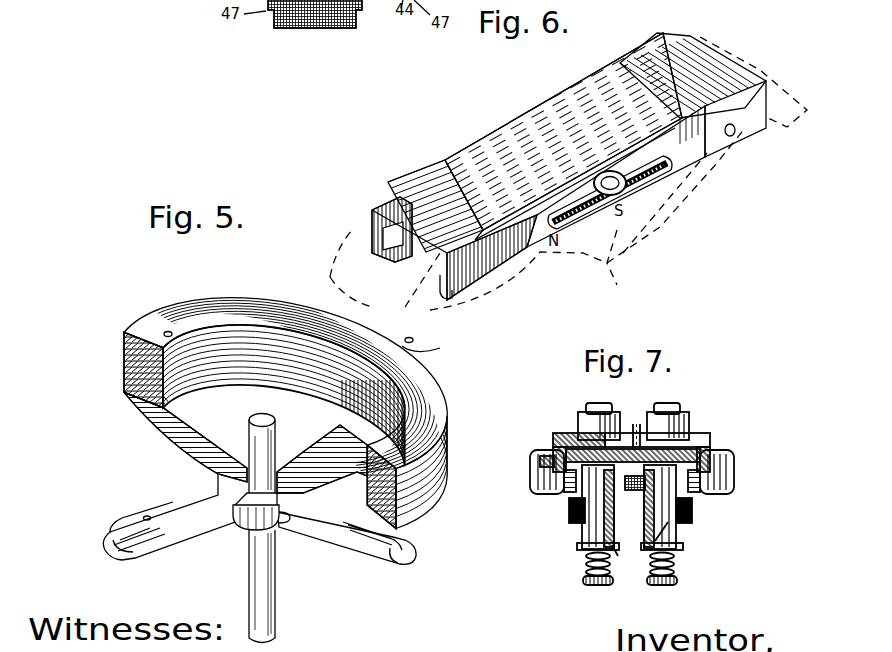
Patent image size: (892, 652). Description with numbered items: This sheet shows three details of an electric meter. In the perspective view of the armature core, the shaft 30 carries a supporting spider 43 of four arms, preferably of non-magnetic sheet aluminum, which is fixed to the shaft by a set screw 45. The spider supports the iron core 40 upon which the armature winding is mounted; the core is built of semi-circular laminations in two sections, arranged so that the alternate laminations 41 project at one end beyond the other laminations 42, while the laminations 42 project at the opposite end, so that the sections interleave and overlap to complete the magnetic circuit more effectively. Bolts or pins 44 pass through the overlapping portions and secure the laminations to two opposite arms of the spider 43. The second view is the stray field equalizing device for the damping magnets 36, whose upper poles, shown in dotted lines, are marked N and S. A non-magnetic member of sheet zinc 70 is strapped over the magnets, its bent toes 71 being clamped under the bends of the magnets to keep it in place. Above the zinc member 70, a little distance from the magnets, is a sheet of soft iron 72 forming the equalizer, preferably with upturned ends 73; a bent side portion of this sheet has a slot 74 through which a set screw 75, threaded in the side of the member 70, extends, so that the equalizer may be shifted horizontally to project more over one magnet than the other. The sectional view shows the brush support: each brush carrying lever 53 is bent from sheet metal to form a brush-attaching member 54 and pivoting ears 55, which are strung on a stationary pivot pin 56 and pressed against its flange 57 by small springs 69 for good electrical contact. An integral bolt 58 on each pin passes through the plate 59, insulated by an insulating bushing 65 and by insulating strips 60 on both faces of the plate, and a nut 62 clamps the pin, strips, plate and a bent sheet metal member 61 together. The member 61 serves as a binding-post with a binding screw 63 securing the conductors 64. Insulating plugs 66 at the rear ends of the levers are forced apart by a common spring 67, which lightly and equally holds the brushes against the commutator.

In FIG. 5, the shaft 30 is at (276, 585).
In FIG. 6, the permanent magnets 36 is at (617, 285).
In FIG. 5, the iron core 40 is at (280, 414).
In FIG. 5, the alternate laminations 41 is at (357, 479).
In FIG. 5, the laminations 42 is at (123, 350).
In FIG. 5, the supporting spider 43 is at (214, 468).
In FIG. 5, the bolts or pins 44 is at (165, 330).
In FIG. 5, the set screw 45 is at (284, 524).
In FIG. 7, the brush carrying lever 53 is at (608, 548).
In FIG. 7, the brush-attaching member 54 is at (672, 540).
In FIG. 7, the pivoting ears 55 is at (583, 547).
In FIG. 7, the pivot pins 56 is at (668, 486).
In FIG. 7, the flanges 57 is at (583, 481).
In FIG. 7, the bolt 58 is at (596, 405).
In FIG. 7, the plate 59 is at (705, 455).
In FIG. 7, the strips of insulating material 60 is at (631, 425).
In FIG. 7, the bent sheet metal member 61 is at (556, 443).
In FIG. 7, the nut 62 is at (583, 418).
In FIG. 7, the binding screw 63 is at (533, 478).
In FIG. 7, the conductors 64 is at (562, 486).
In FIG. 7, the insulating bushing 65 is at (541, 462).
In FIG. 7, the insulating plugs 66 is at (570, 520).
In FIG. 7, the spring 67 is at (634, 488).
In FIG. 7, the small springs 69 is at (583, 565).
In FIG. 6, the sheet zinc member 70 is at (388, 205).
In FIG. 6, the bent toes 71 is at (438, 293).
In FIG. 6, the sheet of soft iron 72 is at (497, 150).
In FIG. 6, the upturned ends 73 is at (405, 180).
In FIG. 6, the slot 74 is at (668, 165).
In FIG. 6, the set screw 75 is at (628, 194).